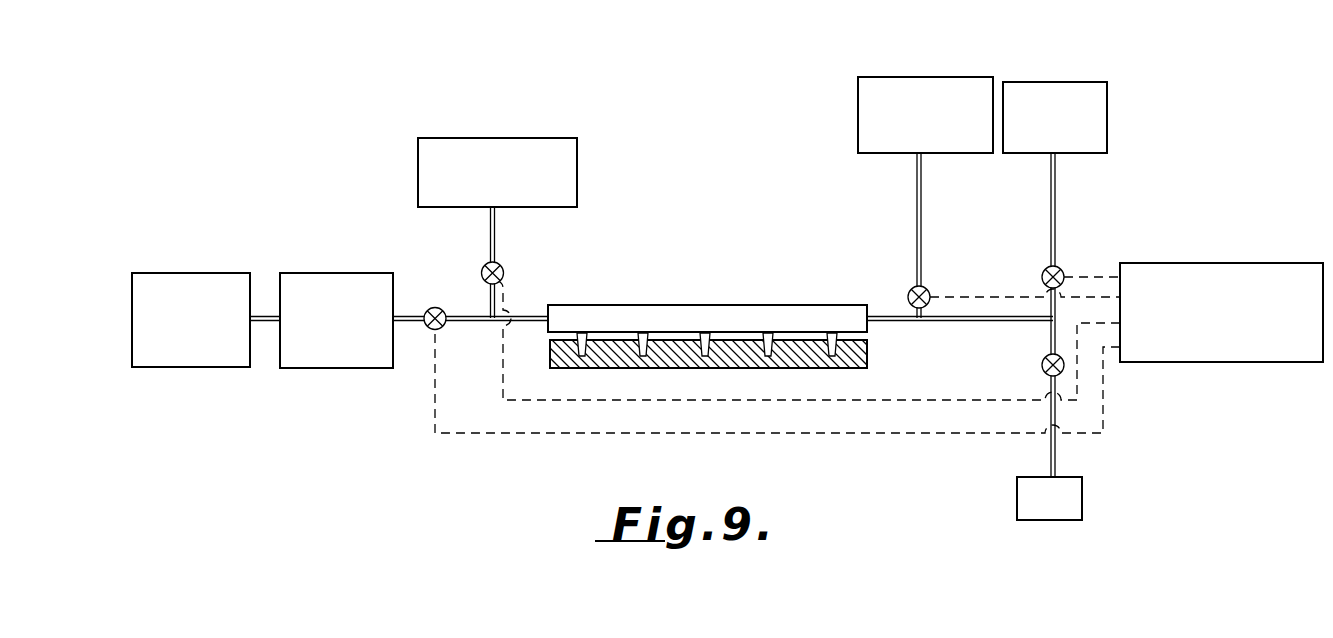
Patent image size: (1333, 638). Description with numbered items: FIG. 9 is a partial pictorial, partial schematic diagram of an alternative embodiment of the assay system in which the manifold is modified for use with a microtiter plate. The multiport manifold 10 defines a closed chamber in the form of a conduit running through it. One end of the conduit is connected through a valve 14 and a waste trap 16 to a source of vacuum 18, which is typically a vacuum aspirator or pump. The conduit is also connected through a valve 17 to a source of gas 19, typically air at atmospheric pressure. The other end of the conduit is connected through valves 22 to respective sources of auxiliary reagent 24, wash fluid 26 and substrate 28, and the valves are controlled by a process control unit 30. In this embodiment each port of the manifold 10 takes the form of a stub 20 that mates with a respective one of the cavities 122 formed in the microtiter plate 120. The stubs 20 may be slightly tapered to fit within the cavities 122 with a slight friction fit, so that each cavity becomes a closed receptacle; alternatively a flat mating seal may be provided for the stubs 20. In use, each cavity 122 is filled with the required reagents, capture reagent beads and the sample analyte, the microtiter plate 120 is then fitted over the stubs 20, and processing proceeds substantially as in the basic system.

The source of vacuum 18 is at (198, 285).
The waste trap 16 is at (342, 283).
The valve 14 is at (438, 308).
The substrate 28 is at (560, 122).
The valves 22 is at (501, 266).
The multiport manifold 10 is at (782, 305).
The microtiter plate 120 is at (869, 355).
The stub 20 is at (640, 395).
The cavities 122 is at (830, 395).
The auxiliary reagent 24 is at (947, 78).
The wash fluid 26 is at (1068, 80).
The process control unit 30 is at (1230, 246).
The valve 17 is at (1041, 366).
The source of gas 19 is at (1083, 488).